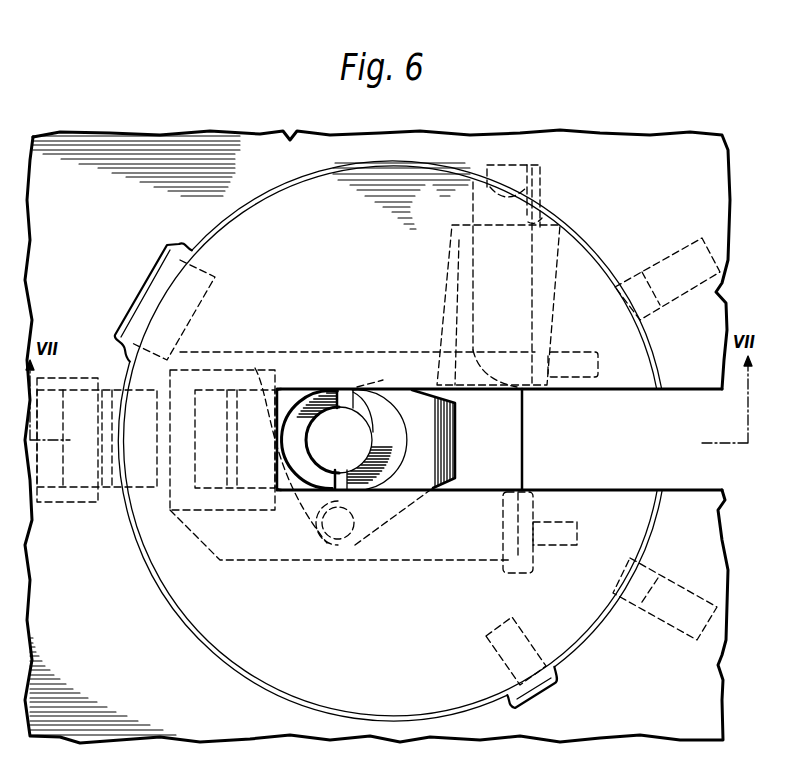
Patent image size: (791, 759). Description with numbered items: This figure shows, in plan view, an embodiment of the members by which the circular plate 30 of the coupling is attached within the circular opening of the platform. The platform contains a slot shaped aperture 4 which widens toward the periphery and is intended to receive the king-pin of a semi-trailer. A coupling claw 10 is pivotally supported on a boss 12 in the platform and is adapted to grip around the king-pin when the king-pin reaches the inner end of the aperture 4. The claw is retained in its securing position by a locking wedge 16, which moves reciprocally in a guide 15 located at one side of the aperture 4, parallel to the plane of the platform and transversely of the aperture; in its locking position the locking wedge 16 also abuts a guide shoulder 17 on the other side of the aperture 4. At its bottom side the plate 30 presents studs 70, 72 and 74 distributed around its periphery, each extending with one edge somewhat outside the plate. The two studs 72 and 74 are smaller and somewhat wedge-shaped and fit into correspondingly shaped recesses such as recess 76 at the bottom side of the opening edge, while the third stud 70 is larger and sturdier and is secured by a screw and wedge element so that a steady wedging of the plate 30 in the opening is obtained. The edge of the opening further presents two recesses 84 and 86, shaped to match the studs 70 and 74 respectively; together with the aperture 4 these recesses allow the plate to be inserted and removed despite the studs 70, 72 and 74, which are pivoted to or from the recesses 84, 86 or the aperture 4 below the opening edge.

The slot shaped aperture 4 is at (638, 391).
The coupling claw 10 is at (450, 443).
The boss 12 is at (363, 543).
The guide 15 is at (550, 302).
The locking wedge 16 is at (530, 222).
The guide shoulder 17 is at (529, 553).
The plate 30 is at (297, 179).
The stud 70 is at (215, 277).
The stud 72 is at (676, 258).
The stud 74 is at (500, 650).
The recess 76 is at (673, 290).
The recess 84 is at (181, 246).
The recess 86 is at (558, 676).